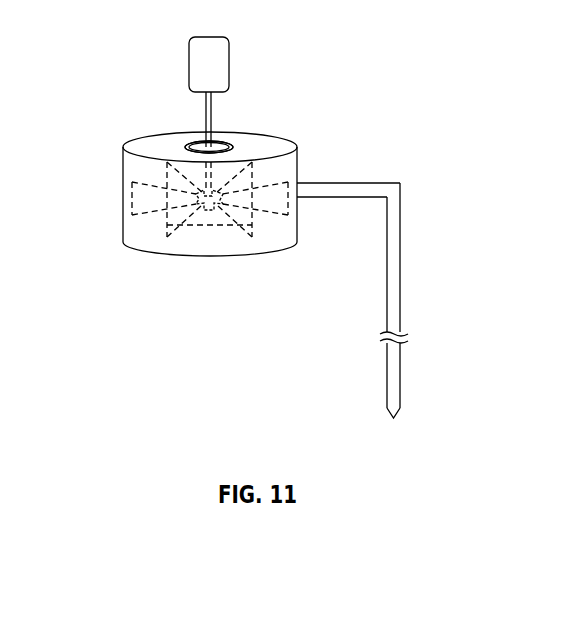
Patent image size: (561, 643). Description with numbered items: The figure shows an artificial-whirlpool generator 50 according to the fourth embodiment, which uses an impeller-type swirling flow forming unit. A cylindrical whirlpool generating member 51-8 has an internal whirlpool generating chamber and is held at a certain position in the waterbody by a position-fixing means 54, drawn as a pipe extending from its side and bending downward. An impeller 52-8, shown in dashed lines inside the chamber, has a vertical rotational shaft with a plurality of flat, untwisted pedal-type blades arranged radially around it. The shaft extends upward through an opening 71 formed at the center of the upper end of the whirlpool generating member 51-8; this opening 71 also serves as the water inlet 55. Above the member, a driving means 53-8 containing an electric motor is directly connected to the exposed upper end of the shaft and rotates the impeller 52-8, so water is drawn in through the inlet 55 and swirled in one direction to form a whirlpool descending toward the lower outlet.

The artificial-whirlpool generator 50 is at (323, 115).
The whirlpool generating member 51-8 is at (277, 133).
The impeller 52-8 is at (203, 222).
The driving means 53-8 is at (189, 63).
The position-fixing means 54 is at (400, 257).
The opening 71 is at (197, 140).
The water inlet 55 is at (209, 147).